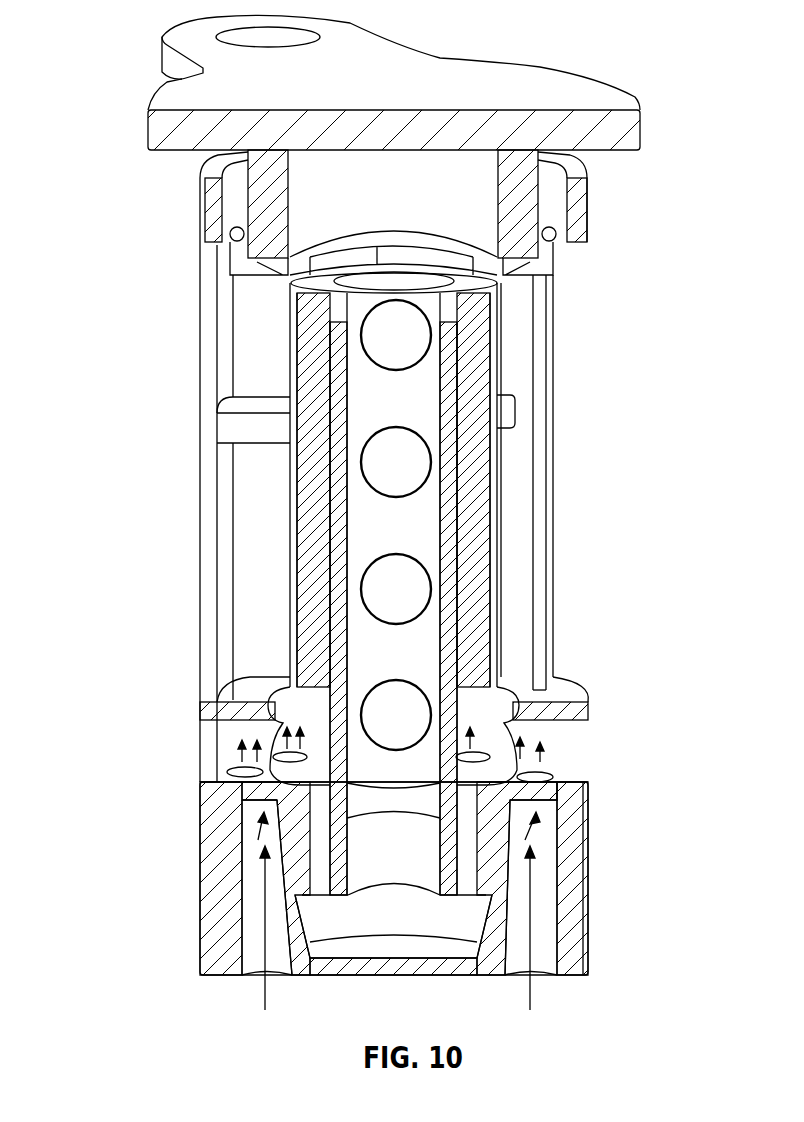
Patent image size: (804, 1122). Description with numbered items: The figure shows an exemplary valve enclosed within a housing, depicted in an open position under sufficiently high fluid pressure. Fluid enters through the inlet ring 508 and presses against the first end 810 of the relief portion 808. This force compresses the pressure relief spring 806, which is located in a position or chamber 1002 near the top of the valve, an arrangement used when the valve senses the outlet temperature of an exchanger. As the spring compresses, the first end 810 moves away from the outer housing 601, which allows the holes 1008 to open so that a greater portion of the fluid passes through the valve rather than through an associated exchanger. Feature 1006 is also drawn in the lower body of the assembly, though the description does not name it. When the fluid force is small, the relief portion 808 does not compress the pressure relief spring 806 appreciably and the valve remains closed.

The chamber 1002 is at (200, 241).
The pressure relief spring 806 is at (465, 183).
The relief portion 808 is at (523, 490).
The first end 810 is at (573, 713).
The outer housing 601 is at (570, 768).
The holes 1008 is at (588, 796).
The inlet channel 1006 is at (483, 833).
The inlet ring 508 is at (550, 928).